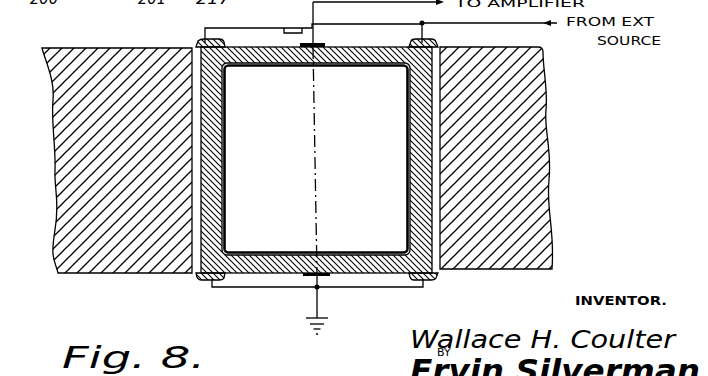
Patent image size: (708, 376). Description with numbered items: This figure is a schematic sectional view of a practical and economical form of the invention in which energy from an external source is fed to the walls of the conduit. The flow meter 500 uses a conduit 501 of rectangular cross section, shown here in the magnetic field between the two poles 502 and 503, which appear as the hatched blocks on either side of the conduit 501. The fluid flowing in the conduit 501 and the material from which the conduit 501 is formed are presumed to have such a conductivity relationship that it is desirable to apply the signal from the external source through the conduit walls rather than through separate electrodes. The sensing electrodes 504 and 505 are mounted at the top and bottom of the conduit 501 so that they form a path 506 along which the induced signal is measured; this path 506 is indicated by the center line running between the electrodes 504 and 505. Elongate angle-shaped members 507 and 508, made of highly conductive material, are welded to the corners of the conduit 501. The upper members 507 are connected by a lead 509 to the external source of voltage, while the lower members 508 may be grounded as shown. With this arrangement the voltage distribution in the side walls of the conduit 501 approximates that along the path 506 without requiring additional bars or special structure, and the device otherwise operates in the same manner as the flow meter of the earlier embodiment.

The flow meter 500 is at (147, 37).
The conduit 501 is at (257, 274).
The pole 502 is at (75, 189).
The pole 503 is at (541, 177).
The sensing electrode 504 is at (290, 21).
The sensing electrode 505 is at (326, 276).
The path 506 is at (318, 190).
The angle-shaped member 507 is at (204, 42).
The angle-shaped member 508 is at (199, 279).
The lead 509 is at (506, 25).